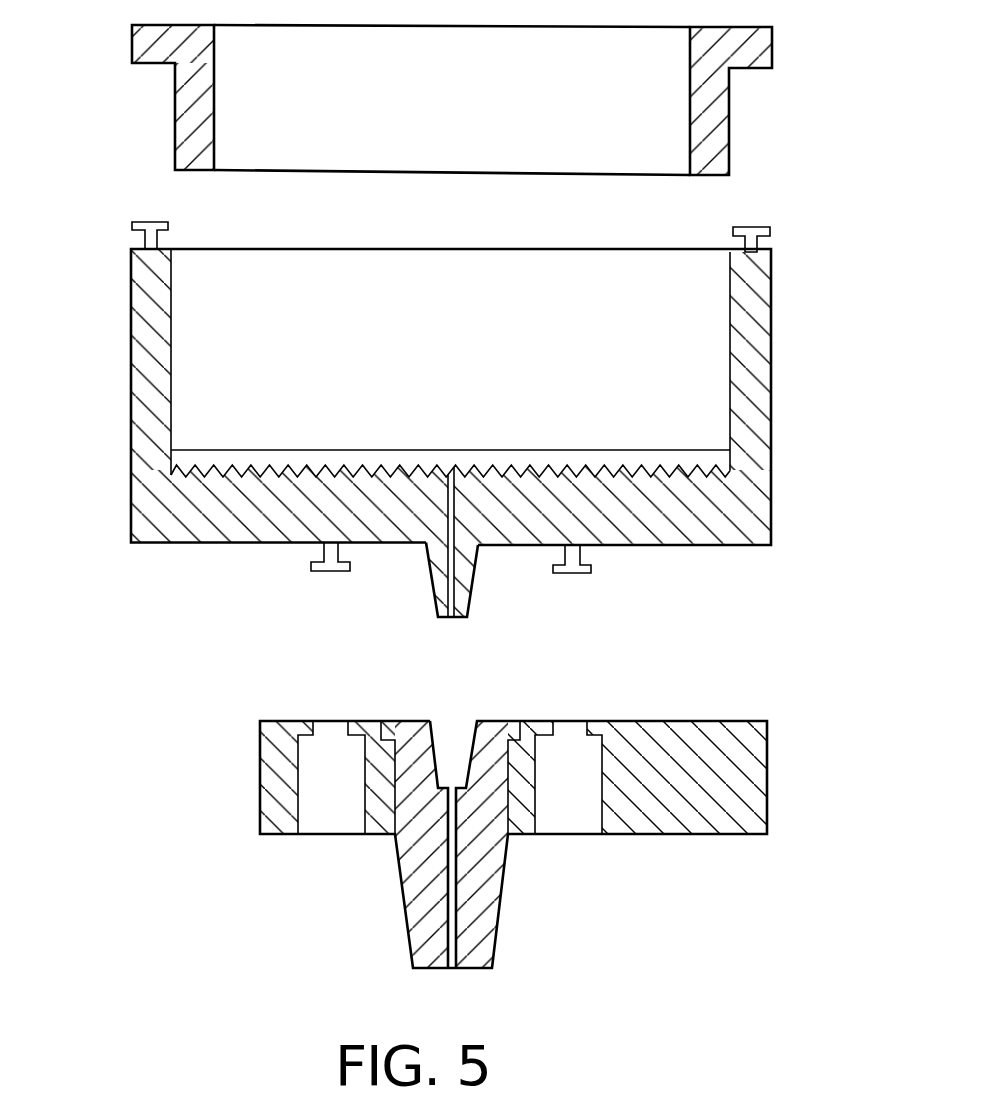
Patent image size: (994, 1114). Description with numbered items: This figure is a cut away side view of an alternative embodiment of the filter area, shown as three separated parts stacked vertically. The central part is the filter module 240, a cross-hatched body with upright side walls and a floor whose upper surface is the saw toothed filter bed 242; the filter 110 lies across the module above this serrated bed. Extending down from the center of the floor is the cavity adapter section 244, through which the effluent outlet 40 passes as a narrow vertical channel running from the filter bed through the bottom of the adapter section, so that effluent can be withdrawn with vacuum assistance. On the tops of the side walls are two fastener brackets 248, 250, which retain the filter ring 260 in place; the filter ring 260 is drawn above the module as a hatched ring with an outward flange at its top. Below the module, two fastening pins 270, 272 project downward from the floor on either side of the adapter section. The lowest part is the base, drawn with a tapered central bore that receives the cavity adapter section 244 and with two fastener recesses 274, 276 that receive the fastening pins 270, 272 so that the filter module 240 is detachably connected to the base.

The filter ring 260 is at (730, 115).
The filter module 240 is at (130, 430).
The saw toothed filter bed 242 is at (217, 467).
The filter 110 is at (580, 452).
The effluent outlet 40 is at (454, 467).
The cavity adapter section 244 is at (431, 592).
The fastener bracket 248 is at (148, 222).
The fastener bracket 250 is at (770, 227).
The fastening pin 270 is at (322, 572).
The fastening pin 272 is at (580, 574).
The fastener recess 274 is at (330, 721).
The fastener recess 276 is at (572, 721).